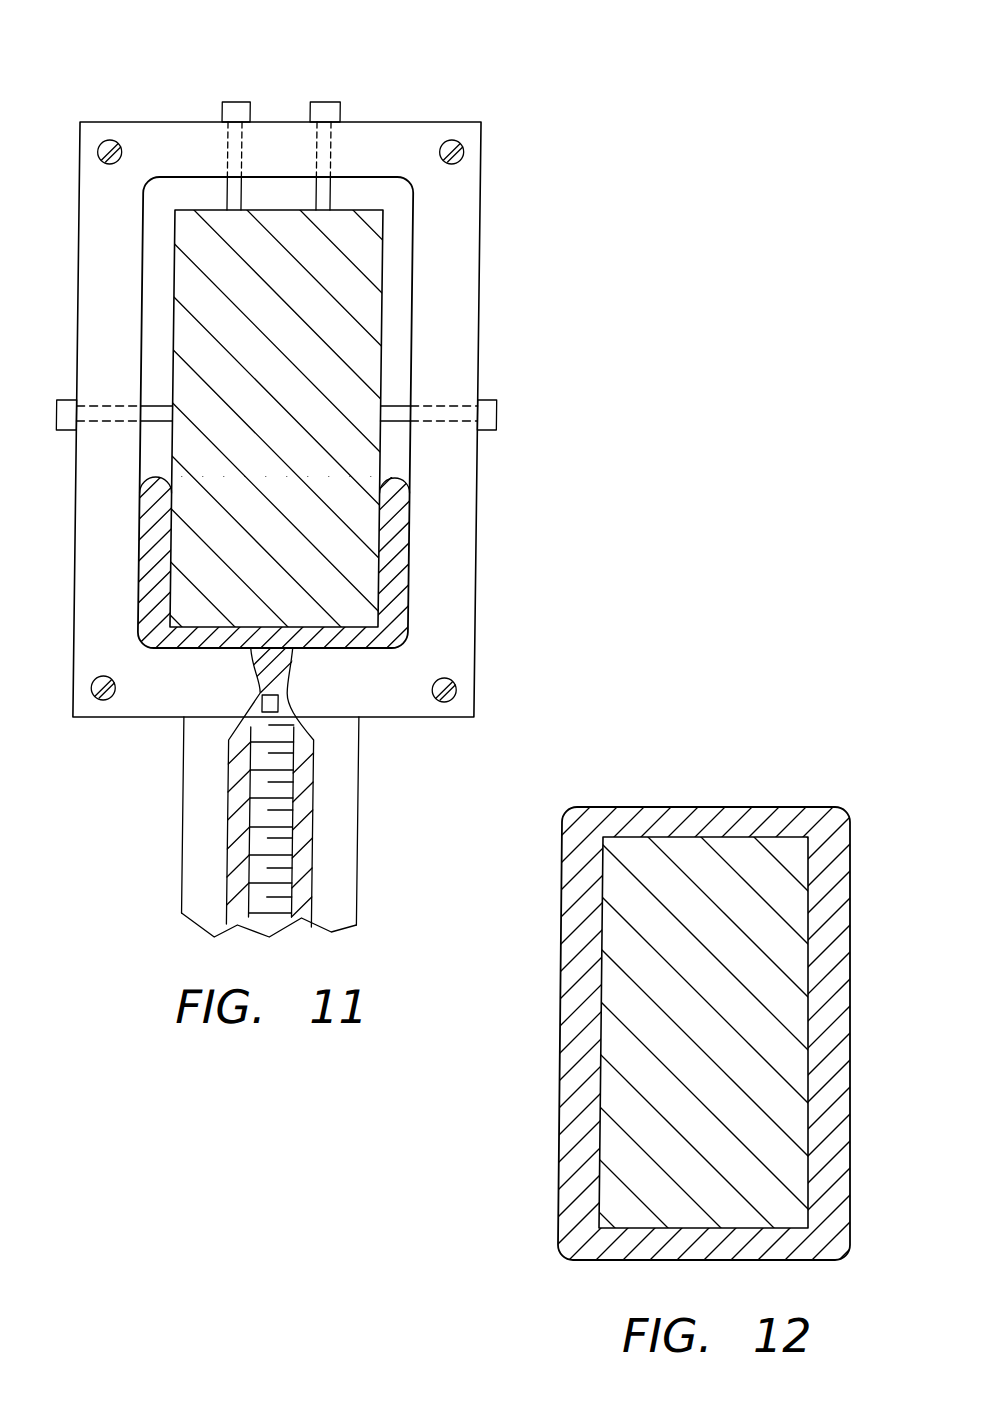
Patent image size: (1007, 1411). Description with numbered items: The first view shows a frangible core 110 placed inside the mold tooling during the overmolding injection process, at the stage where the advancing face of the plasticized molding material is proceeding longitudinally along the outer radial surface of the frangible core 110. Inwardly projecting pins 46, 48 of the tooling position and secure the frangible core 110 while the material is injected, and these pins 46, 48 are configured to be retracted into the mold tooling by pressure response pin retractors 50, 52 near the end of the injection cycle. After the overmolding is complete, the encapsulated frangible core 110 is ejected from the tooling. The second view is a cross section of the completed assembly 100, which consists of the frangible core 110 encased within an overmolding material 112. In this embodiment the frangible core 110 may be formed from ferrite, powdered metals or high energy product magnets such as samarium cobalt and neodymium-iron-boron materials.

In FIG. 11, the inwardly projecting pin 46 is at (458, 407).
In FIG. 11, the inwardly projecting pin 48 is at (333, 193).
In FIG. 11, the pressure response pin retractor 50 is at (499, 422).
In FIG. 11, the pressure response pin retractor 52 is at (325, 100).
In FIG. 11, the frangible core 110 is at (324, 568).
In FIG. 12, the frangible core 110 is at (630, 1060).
In FIG. 12, the overmolding material 112 is at (583, 977).
In FIG. 12, the completed assembly 100 is at (558, 1020).